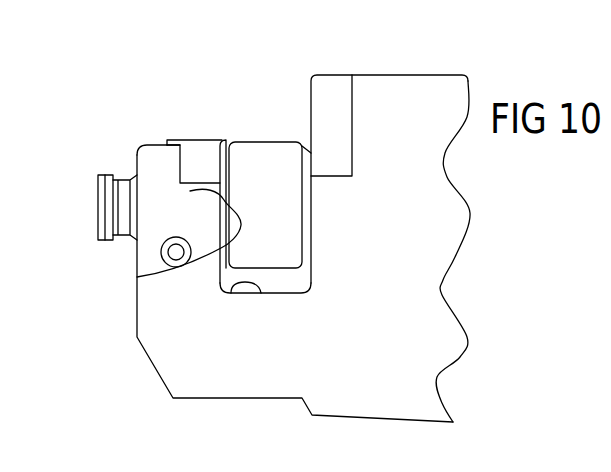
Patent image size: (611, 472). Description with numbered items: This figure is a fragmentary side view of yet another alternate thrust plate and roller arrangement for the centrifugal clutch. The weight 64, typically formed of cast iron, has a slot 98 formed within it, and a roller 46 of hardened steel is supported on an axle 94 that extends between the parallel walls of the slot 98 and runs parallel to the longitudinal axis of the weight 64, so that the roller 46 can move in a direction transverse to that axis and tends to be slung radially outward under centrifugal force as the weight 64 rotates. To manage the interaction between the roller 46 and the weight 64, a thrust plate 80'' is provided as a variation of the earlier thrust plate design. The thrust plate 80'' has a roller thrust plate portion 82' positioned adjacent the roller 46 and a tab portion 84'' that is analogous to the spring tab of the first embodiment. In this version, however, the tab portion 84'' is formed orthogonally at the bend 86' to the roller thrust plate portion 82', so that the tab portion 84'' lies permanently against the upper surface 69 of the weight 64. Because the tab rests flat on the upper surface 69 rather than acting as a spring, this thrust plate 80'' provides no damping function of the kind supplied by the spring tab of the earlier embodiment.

The weight 64 is at (384, 314).
The upper surface 69 is at (157, 145).
The tab portion 84'' is at (168, 106).
The orthogonal bend 86' is at (249, 167).
The roller 46 is at (268, 157).
The slot 98 is at (245, 285).
The thrust plate 80'' is at (155, 239).
The roller thrust plate portion 82' is at (118, 207).
The axle 94 is at (103, 175).